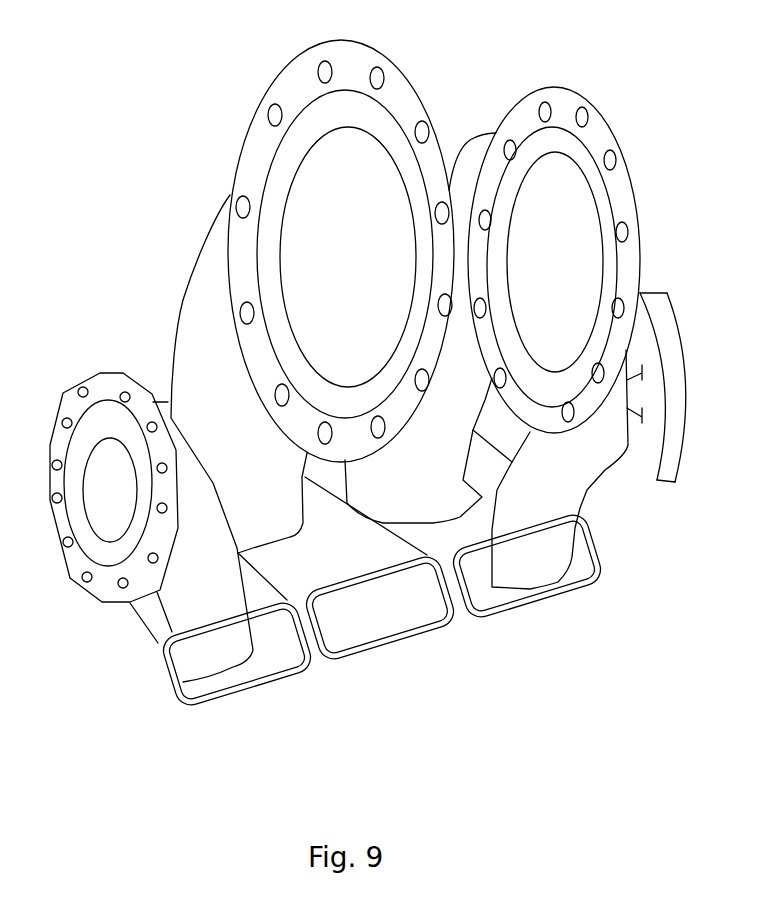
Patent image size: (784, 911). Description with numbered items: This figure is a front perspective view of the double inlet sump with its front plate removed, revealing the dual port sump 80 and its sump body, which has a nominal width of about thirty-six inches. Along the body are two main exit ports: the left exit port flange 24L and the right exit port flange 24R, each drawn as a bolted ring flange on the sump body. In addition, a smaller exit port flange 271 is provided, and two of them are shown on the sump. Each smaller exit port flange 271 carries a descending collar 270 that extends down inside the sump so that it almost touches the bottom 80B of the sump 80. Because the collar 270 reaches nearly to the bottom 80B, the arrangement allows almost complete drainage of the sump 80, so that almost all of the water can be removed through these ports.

The dual port sump 80 is at (450, 706).
The bottom of the sump 80B is at (395, 648).
The left exit port flange 24L is at (270, 463).
The right exit port flange 24R is at (443, 473).
The descending collar 270 is at (203, 655).
The smaller exit port flange 271 is at (192, 593).